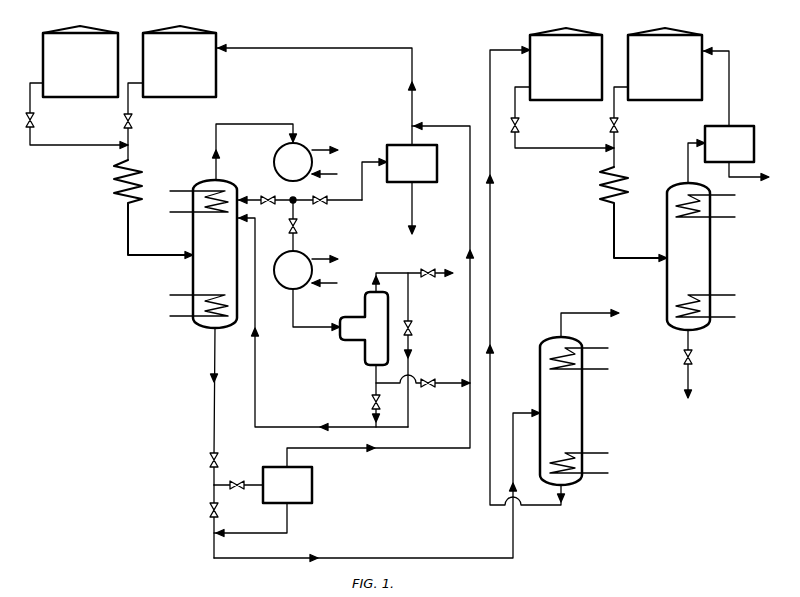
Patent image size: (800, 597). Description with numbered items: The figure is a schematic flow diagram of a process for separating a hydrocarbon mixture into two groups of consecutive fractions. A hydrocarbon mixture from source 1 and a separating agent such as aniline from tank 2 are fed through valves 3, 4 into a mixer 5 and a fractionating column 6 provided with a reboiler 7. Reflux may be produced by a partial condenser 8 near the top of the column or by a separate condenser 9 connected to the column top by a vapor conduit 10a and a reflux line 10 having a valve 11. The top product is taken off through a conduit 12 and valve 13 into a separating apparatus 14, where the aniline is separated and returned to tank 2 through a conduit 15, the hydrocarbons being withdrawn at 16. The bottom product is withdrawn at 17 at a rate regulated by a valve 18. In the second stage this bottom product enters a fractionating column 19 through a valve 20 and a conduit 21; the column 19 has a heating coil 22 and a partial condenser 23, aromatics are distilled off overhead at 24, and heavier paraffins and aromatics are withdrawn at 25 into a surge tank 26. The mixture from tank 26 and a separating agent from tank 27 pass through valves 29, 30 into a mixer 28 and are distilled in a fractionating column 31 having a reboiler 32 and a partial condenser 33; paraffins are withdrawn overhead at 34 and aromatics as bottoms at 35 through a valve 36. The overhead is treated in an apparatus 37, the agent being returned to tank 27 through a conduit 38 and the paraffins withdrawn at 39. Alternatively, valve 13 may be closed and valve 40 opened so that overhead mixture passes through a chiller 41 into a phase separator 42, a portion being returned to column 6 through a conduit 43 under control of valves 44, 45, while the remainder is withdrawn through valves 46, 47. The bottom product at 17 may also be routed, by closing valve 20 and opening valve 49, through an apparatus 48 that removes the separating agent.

The source 1 is at (100, 30).
The tank 2 is at (203, 30).
The valve 3 is at (34, 121).
The valve 4 is at (132, 122).
The mixer 5 is at (142, 172).
The fractionating column 6 is at (228, 182).
The reboiler 7 is at (170, 295).
The partial condenser 8 is at (177, 190).
The condenser 9 is at (274, 160).
The reflux line 10 is at (247, 197).
The vapor conduit 10a is at (236, 124).
The valve 11 is at (271, 196).
The conduit 12 is at (341, 197).
The valve 13 is at (315, 196).
The separating apparatus 14 is at (387, 142).
The conduit 15 is at (307, 48).
The hydrocarbon withdrawal 16 is at (412, 201).
The bottom product outlet 17 is at (214, 407).
The valve 18 is at (210, 460).
The fractionating column 19 is at (540, 340).
The valve 20 is at (210, 510).
The conduit 21 is at (346, 558).
The heating coil 22 is at (596, 453).
The partial condenser 23 is at (594, 348).
The overhead outlet 24 is at (570, 313).
The bottom product outlet 25 is at (523, 505).
The surge tank 26 is at (590, 32).
The tank 27 is at (695, 32).
The mixer 28 is at (626, 174).
The valve 29 is at (519, 125).
The valve 30 is at (618, 125).
The fractionating column 31 is at (667, 223).
The reboiler 32 is at (722, 295).
The partial condenser 33 is at (722, 195).
The overhead outlet 34 is at (688, 157).
The bottom product outlet 35 is at (688, 341).
The valve 36 is at (684, 358).
The apparatus 37 is at (740, 126).
The conduit 38 is at (729, 86).
The paraffin withdrawal 39 is at (741, 177).
The valve 40 is at (297, 226).
The chiller 41 is at (306, 253).
The phase separator 42 is at (364, 305).
The conduit 43 is at (255, 355).
The valve 44 is at (412, 328).
The valve 45 is at (372, 402).
The valve 46 is at (427, 269).
The valve 47 is at (428, 379).
The apparatus 48 is at (281, 463).
The valve 49 is at (235, 480).